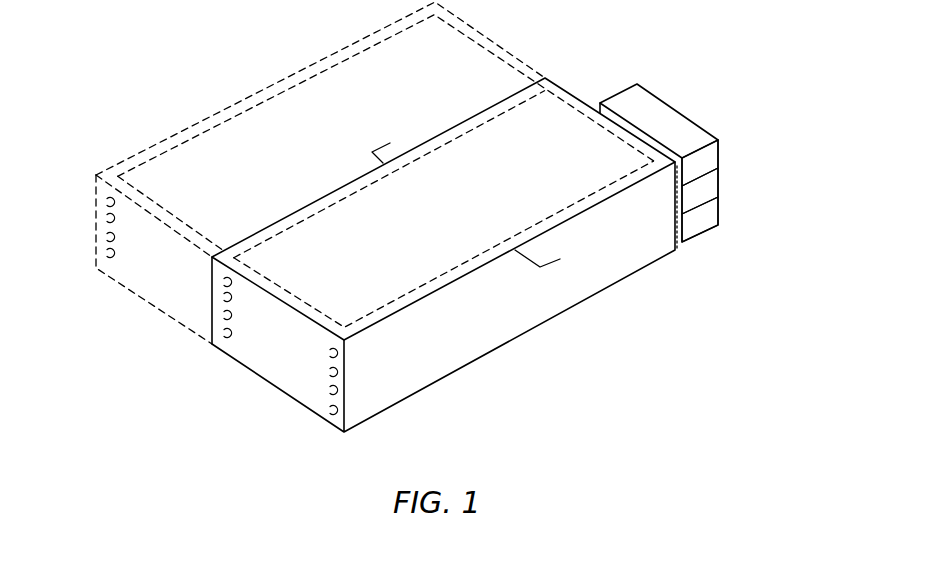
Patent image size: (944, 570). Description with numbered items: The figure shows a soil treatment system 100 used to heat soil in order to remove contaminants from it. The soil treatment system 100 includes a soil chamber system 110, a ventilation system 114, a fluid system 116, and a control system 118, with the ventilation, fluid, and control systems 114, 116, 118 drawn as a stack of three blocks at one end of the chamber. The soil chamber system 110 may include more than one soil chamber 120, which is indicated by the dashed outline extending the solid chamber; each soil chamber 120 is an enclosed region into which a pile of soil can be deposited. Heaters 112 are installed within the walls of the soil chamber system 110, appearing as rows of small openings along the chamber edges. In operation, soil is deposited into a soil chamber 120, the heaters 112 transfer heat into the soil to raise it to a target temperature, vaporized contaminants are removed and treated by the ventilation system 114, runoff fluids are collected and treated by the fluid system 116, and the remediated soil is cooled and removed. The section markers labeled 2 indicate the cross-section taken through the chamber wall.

The soil treatment system 100 is at (206, 33).
The soil chamber system 110 is at (617, 56).
The heaters 112 is at (106, 262).
The ventilation system 114 is at (733, 220).
The fluid system 116 is at (733, 181).
The control system 118 is at (731, 146).
The soil chamber 120 is at (264, 176).
The section line indicator for FIG. 2 is at (478, 192).